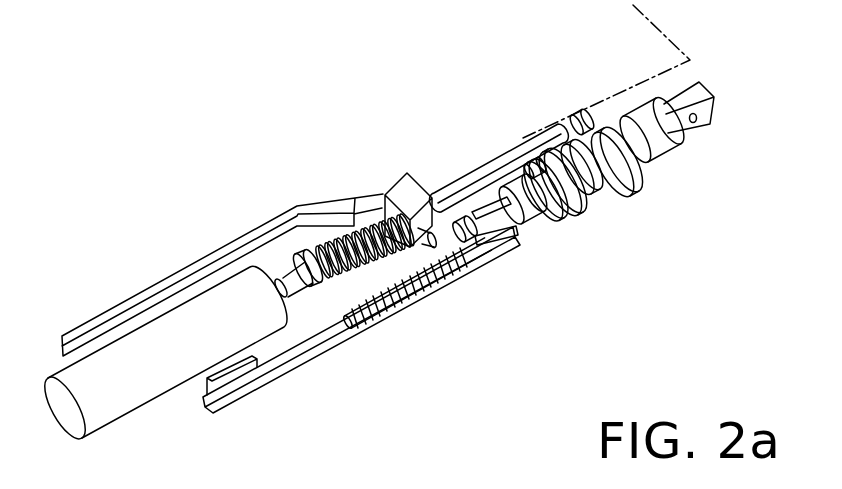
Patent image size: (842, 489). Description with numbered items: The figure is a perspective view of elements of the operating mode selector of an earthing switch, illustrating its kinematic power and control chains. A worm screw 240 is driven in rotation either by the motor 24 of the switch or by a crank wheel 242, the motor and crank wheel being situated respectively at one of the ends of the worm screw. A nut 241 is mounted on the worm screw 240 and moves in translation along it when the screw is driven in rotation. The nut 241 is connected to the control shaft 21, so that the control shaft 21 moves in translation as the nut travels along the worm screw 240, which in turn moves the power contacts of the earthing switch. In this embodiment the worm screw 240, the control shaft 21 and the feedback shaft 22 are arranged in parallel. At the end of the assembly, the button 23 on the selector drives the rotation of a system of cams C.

The control shaft 21 is at (228, 248).
The feedback shaft 22 is at (292, 353).
The button 23 is at (700, 97).
The motor 24 is at (125, 358).
The worm screw 240 is at (373, 253).
The nut 241 is at (407, 199).
The crank wheel 242 is at (634, 9).
The system of cams C is at (680, 182).